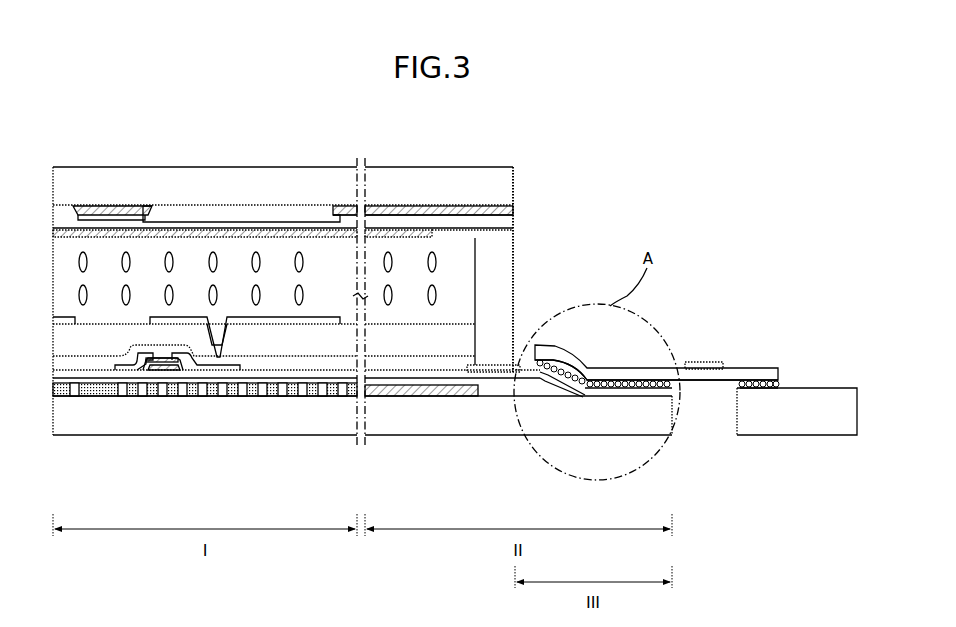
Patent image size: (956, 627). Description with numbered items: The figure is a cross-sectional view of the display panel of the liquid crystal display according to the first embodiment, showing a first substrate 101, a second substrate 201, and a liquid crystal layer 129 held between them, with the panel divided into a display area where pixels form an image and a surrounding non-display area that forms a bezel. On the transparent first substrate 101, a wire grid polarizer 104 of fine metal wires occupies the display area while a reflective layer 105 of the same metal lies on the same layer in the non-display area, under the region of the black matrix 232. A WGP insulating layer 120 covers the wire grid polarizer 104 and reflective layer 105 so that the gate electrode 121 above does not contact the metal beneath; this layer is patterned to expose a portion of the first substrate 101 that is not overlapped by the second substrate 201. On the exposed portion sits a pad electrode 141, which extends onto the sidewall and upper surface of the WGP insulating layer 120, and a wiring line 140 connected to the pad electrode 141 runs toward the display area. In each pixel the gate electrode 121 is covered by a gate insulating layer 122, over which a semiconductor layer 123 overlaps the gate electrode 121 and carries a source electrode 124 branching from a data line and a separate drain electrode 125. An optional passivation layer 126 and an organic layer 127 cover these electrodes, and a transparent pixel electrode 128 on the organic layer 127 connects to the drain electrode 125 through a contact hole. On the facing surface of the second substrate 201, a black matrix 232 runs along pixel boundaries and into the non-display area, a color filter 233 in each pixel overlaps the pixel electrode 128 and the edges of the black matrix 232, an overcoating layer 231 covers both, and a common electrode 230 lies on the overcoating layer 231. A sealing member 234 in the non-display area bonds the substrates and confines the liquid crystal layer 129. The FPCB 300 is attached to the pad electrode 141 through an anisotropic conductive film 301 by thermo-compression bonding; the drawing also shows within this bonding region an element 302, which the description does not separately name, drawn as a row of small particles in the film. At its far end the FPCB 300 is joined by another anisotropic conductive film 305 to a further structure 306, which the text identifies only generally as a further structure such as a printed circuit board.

The first substrate 101 is at (493, 430).
The wire grid polarizer 104 is at (270, 390).
The reflective layer 105 is at (428, 397).
The WGP insulating layer 120 is at (540, 388).
The gate electrode 121 is at (168, 370).
The gate insulating layer 122 is at (308, 390).
The semiconductor layer 123 is at (160, 362).
The source electrode 124 is at (127, 372).
The drain electrode 125 is at (217, 370).
The passivation layer 126 is at (83, 363).
The organic layer 127 is at (55, 338).
The pixel electrode 128 is at (160, 318).
The liquid crystal layer 129 is at (306, 254).
The wiring line 140 is at (487, 364).
The pad electrode 141 is at (630, 396).
The second substrate 201 is at (455, 185).
The common electrode 230 is at (55, 233).
The overcoating layer 231 is at (408, 220).
The black matrix 232 is at (113, 210).
The color filter 233 is at (215, 215).
The sealing member 234 is at (495, 250).
The FPCB 300 is at (700, 367).
The anisotropic conductive film 301 is at (625, 379).
The conductive balls 302 is at (648, 389).
The another anisotropic conductive film 305 is at (783, 384).
The printed circuit board 306 is at (763, 390).